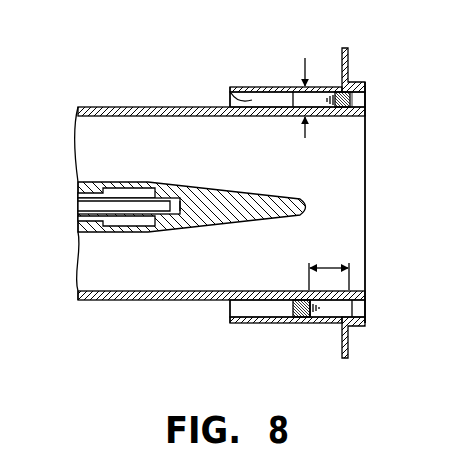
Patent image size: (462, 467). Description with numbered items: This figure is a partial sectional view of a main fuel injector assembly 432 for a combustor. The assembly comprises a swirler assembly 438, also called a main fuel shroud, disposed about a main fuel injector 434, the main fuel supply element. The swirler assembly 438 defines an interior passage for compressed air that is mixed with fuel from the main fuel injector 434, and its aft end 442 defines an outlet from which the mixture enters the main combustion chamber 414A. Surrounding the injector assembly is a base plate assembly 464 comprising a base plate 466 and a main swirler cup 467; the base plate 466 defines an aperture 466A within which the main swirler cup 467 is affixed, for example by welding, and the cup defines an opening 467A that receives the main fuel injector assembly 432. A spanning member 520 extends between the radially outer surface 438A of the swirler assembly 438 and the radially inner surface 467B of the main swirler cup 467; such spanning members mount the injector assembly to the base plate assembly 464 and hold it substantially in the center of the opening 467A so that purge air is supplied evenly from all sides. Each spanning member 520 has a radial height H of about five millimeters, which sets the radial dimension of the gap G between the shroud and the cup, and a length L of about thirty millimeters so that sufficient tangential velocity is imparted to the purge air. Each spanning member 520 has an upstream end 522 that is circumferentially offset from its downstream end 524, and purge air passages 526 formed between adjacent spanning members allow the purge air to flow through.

The main combustion chamber 414A is at (428, 217).
The main fuel injector assembly 432 is at (61, 197).
The main fuel injector 434 is at (204, 195).
The swirler assembly 438 is at (166, 300).
The radially outer surface 438A is at (128, 107).
The aft end 442 is at (368, 171).
The base plate assembly 464 is at (370, 311).
The base plate 466 is at (349, 342).
The aperture 466A is at (358, 97).
The main swirler cup 467 is at (261, 86).
The opening 467A is at (358, 311).
The radially inner surface 467B is at (230, 99).
The spanning member 520 is at (319, 103).
The upstream end 522 is at (294, 302).
The downstream end 524 is at (352, 102).
The purge air passage 526 is at (330, 309).
The gap G is at (275, 308).
The height H is at (305, 126).
The length L is at (329, 270).